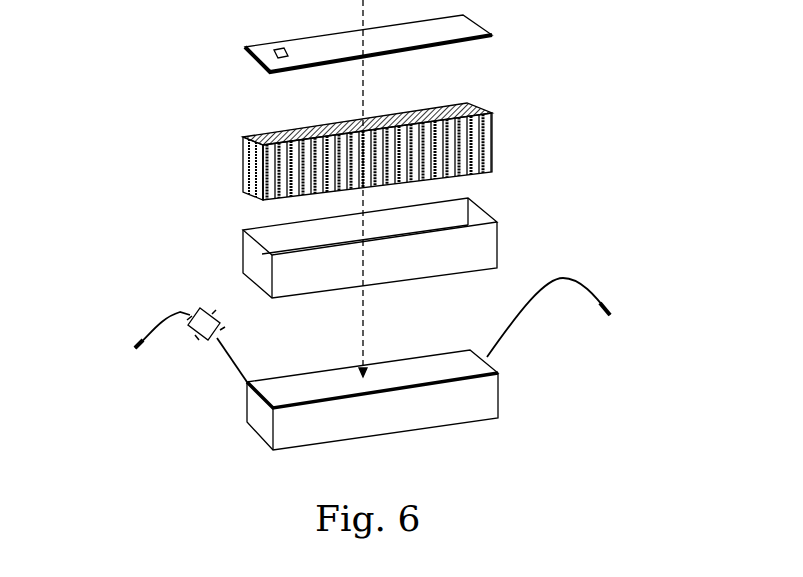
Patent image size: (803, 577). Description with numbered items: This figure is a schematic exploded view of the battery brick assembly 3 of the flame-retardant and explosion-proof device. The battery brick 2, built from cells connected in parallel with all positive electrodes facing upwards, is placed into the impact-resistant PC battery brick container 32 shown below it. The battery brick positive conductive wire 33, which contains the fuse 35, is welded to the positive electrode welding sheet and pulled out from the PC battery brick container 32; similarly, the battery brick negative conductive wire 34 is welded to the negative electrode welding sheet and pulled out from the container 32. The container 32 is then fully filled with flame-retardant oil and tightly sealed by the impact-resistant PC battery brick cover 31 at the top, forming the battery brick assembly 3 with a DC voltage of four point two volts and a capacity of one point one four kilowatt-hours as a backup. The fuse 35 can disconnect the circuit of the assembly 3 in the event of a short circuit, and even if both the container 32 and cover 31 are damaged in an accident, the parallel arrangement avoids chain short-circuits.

The battery brick 2 is at (238, 160).
The battery brick assembly 3 is at (240, 427).
The impact-resistant PC battery brick cover 31 is at (245, 48).
The impact-resistant PC battery brick container 32 is at (493, 210).
The battery brick positive conductive wire 33 is at (153, 320).
The battery brick negative conductive wire 34 is at (592, 282).
The fuse 35 is at (195, 310).